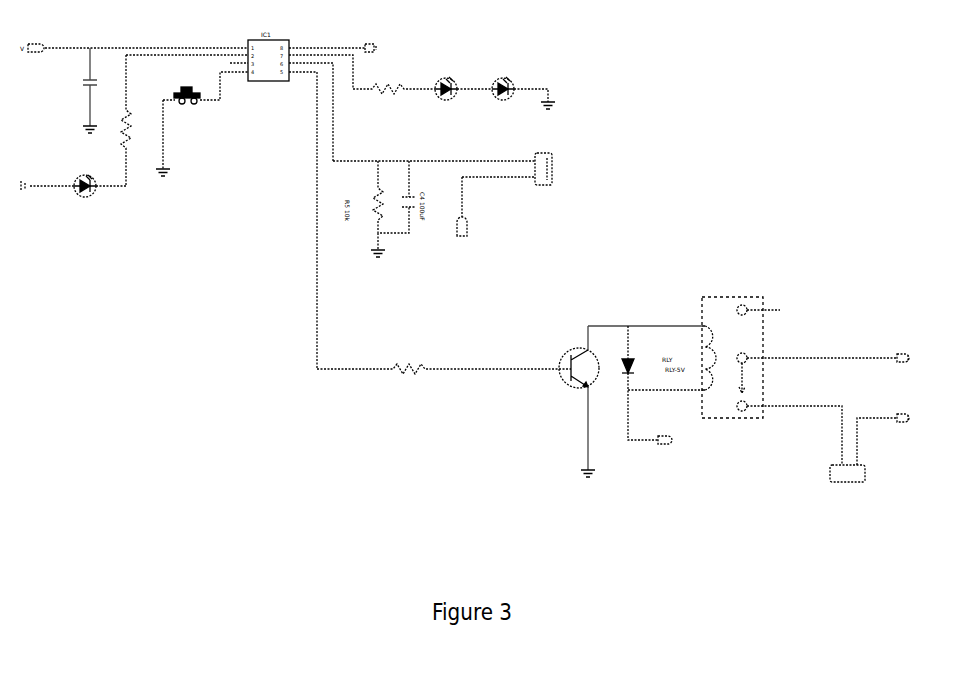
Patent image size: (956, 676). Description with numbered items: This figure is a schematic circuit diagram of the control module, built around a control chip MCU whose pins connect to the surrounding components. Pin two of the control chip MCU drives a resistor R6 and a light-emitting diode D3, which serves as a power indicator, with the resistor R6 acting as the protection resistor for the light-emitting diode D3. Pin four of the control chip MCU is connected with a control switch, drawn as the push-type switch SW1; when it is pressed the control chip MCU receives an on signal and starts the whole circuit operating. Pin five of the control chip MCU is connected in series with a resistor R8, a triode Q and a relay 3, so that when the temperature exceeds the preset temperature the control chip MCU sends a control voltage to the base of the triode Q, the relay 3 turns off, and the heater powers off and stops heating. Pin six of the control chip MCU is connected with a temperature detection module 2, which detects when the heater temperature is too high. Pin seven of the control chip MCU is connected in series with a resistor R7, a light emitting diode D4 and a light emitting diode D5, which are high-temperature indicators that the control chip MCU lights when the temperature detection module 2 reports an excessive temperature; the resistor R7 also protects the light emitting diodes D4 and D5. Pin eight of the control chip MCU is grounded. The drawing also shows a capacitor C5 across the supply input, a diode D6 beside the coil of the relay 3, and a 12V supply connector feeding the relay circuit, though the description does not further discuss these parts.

The temperature detection module 2 is at (550, 182).
The relay 3 is at (710, 303).
The capacitor C5 is at (93, 90).
The resistor R6 is at (184, 120).
The light-emitting diode D3 is at (73, 193).
The switch SW1 is at (202, 124).
The resistor R7 is at (394, 95).
The light emitting diode D4 is at (446, 96).
The light emitting diode D5 is at (503, 96).
The resistor R8 is at (444, 362).
The triode Q is at (577, 401).
The diode D6 is at (630, 383).
The 12V supply connector 12V is at (675, 440).